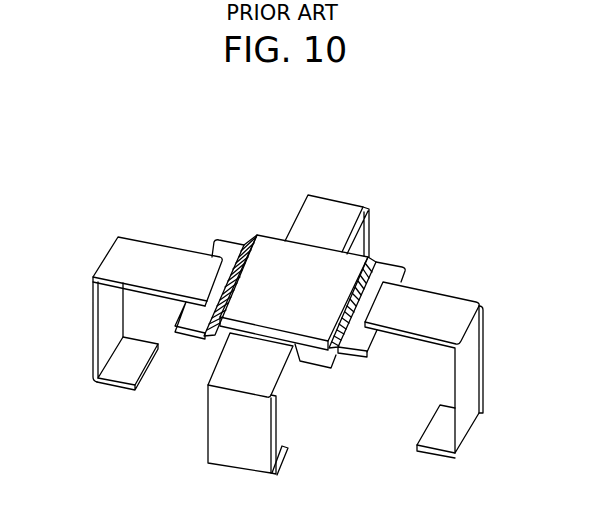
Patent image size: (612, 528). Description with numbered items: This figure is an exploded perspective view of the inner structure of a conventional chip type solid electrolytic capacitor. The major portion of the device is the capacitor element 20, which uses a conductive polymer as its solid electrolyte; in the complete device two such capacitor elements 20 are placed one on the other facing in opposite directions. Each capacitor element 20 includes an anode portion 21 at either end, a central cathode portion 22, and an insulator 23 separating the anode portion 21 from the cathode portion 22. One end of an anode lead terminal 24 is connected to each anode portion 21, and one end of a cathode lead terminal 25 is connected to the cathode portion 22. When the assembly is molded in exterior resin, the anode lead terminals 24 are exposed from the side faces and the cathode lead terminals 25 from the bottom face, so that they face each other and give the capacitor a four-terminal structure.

The capacitor element 20 is at (233, 141).
The anode portion 21 is at (222, 247).
The cathode portion 22 is at (272, 248).
The insulator 23 is at (372, 258).
The anode lead terminal 24 is at (90, 332).
The cathode lead terminal 25 is at (226, 440).